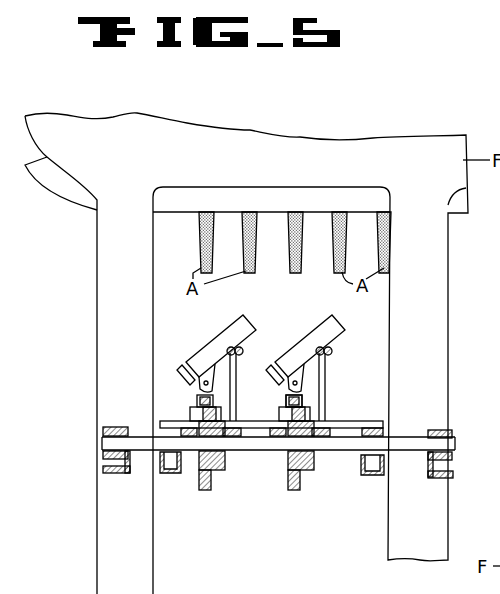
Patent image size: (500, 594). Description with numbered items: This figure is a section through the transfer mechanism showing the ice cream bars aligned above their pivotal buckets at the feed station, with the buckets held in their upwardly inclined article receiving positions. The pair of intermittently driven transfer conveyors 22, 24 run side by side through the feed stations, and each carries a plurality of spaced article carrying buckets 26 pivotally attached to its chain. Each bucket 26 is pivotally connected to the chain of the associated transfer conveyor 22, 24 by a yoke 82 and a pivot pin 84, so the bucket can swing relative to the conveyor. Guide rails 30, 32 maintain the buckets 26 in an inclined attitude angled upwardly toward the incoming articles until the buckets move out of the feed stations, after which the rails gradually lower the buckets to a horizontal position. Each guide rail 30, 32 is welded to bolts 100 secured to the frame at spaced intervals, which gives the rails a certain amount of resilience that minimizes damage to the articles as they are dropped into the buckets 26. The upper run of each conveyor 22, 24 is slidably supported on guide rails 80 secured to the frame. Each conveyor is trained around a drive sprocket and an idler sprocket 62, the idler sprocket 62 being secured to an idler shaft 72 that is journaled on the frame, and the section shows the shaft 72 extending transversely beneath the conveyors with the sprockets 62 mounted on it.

The transfer conveyor 22 is at (312, 398).
The transfer conveyor 24 is at (190, 396).
The article carrying bucket 26 is at (311, 328).
The guide rail 30 is at (331, 350).
The guide rail 32 is at (240, 348).
The idler sprocket 62 is at (288, 479).
The idler shaft 72 is at (411, 452).
The guide rail 80 is at (190, 410).
The yoke 82 is at (303, 395).
The pivot pin 84 is at (300, 386).
The bolt 100 is at (236, 397).